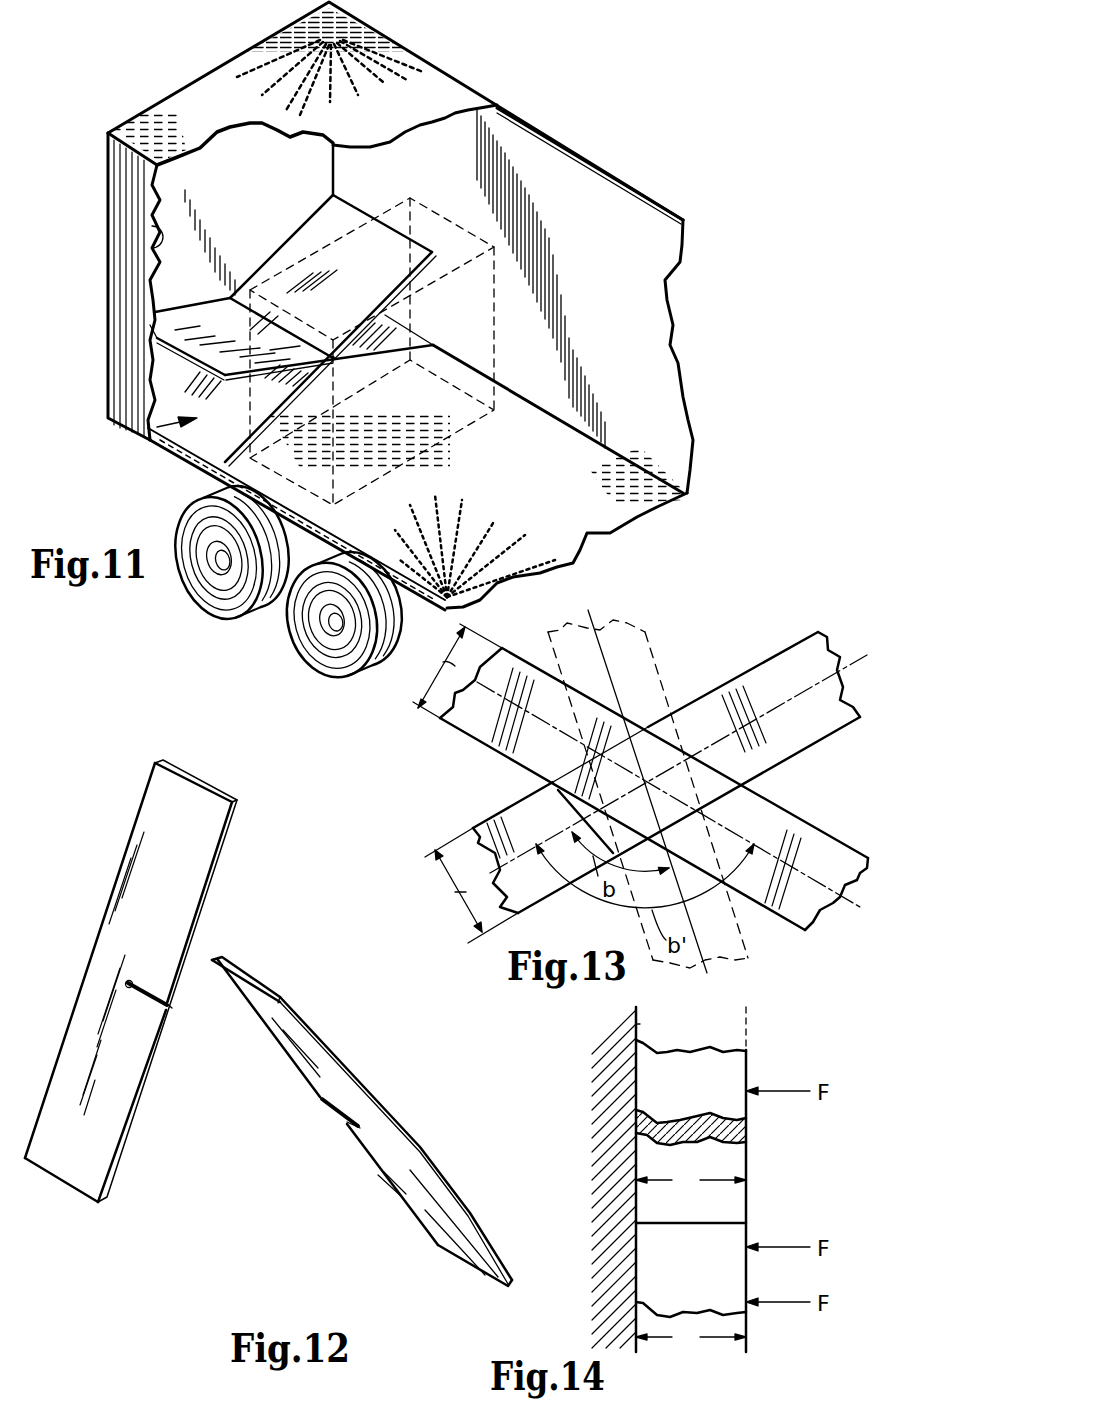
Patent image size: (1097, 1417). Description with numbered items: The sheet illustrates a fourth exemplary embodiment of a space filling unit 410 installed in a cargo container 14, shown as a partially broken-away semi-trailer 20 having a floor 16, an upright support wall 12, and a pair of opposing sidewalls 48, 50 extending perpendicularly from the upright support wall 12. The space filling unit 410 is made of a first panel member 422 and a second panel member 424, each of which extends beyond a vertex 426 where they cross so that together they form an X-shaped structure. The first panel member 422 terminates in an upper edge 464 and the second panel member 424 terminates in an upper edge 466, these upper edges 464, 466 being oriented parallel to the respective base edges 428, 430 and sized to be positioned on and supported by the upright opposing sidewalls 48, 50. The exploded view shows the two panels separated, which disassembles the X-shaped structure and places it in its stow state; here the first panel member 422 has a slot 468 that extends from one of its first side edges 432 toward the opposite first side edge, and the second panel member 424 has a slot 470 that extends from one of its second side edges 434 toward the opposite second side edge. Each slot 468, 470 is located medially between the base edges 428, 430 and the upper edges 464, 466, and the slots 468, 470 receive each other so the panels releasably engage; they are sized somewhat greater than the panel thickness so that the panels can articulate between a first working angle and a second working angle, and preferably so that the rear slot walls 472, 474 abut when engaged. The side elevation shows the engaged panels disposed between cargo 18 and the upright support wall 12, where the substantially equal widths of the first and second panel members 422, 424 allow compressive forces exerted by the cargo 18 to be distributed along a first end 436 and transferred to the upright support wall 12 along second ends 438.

In FIG. 11, the upright support wall 12 is at (228, 150).
In FIG. 14, the upright support wall 12 is at (637, 1024).
In FIG. 11, the cargo container 14 is at (428, 88).
In FIG. 11, the floor 16 is at (610, 533).
In FIG. 14, the cargo 18 is at (745, 1010).
In FIG. 11, the semi-trailer 20 is at (452, 103).
In FIG. 11, the sidewall 48 is at (150, 250).
In FIG. 11, the sidewall 50 is at (583, 195).
In FIG. 11, the space filling unit 410 is at (150, 434).
In FIG. 11, the first panel member 422 is at (338, 224).
In FIG. 14, the first panel member 422 is at (725, 1075).
In FIG. 12, the first panel member 422 is at (163, 810).
In FIG. 11, the second panel member 424 is at (203, 332).
In FIG. 13, the second panel member 424 is at (507, 762).
In FIG. 14, the second panel member 424 is at (725, 1158).
In FIG. 12, the second panel member 424 is at (275, 1018).
In FIG. 11, the vertex 426 is at (335, 365).
In FIG. 13, the vertex 426 is at (797, 728).
In FIG. 14, the vertex 426 is at (746, 1223).
In FIG. 11, the base edge 428 is at (185, 452).
In FIG. 12, the base edge 428 is at (75, 1188).
In FIG. 11, the base edge 430 is at (417, 330).
In FIG. 12, the base edge 430 is at (465, 1260).
In FIG. 12, the first side edges 432 is at (120, 870).
In FIG. 12, the second side edges 434 is at (330, 1048).
In FIG. 14, the first end 436 is at (750, 1204).
In FIG. 14, the second ends 438 is at (622, 1163).
In FIG. 11, the upper edge 464 is at (355, 207).
In FIG. 12, the upper edge 464 is at (187, 777).
In FIG. 11, the upper edge 466 is at (157, 380).
In FIG. 12, the upper edge 466 is at (267, 983).
In FIG. 12, the slot 468 is at (172, 1005).
In FIG. 12, the slot 470 is at (332, 1107).
In FIG. 12, the rear slot wall 472 is at (130, 987).
In FIG. 12, the rear slot wall 474 is at (350, 1122).